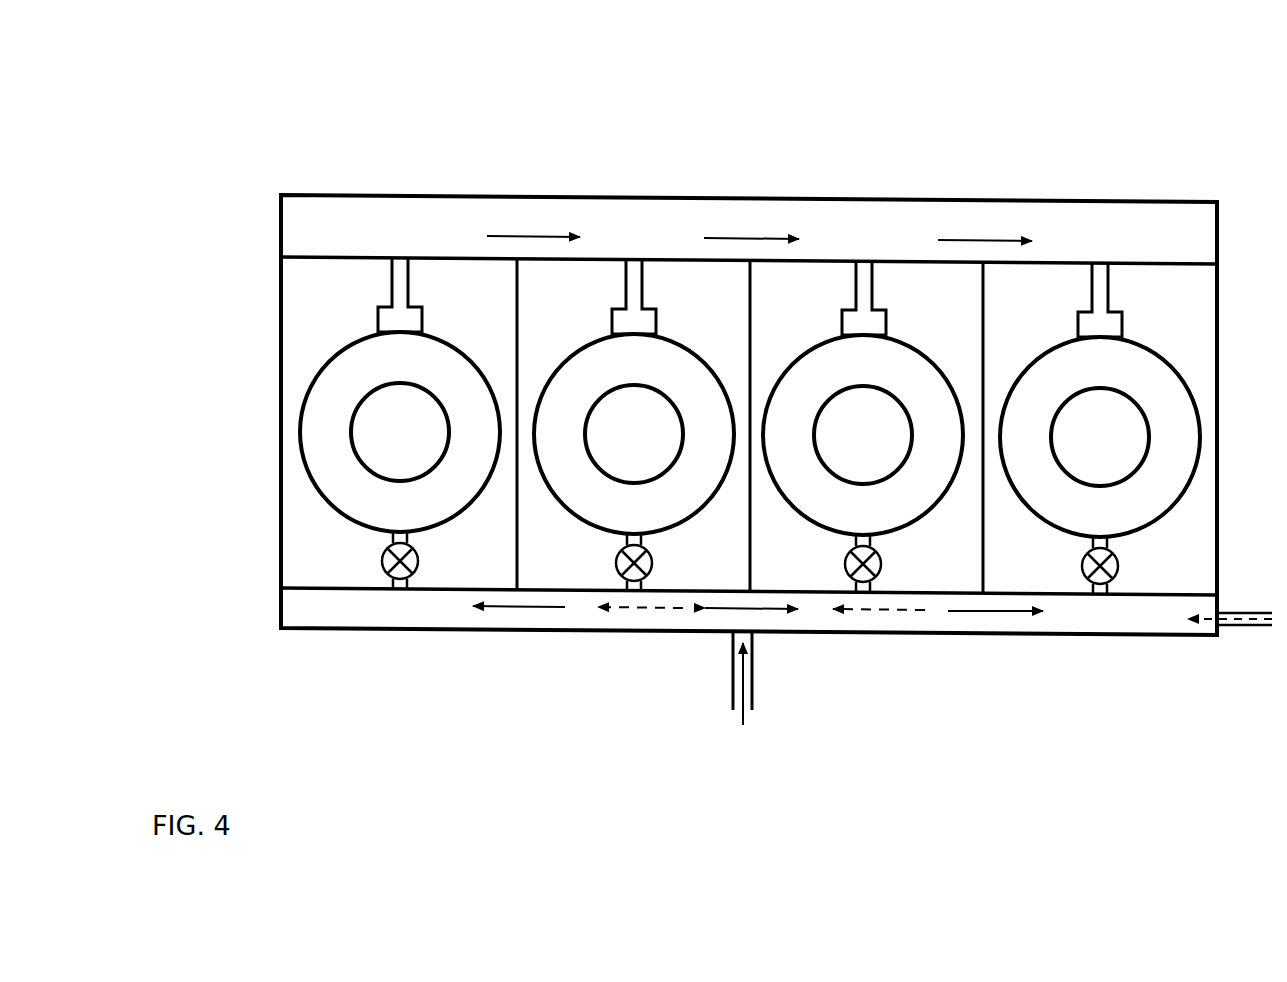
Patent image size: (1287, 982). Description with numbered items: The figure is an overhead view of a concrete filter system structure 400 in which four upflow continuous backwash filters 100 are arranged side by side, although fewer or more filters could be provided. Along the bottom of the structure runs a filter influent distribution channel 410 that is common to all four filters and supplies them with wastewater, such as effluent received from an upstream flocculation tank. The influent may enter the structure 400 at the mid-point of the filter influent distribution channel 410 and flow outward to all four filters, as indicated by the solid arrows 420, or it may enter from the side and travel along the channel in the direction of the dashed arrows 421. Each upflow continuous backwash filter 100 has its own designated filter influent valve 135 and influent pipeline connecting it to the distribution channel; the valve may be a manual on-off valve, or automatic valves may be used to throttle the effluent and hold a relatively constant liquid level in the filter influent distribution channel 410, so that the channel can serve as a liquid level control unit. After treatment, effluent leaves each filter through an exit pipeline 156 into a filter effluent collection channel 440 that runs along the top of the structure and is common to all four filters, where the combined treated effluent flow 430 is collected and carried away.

The concrete filter system structure 400 is at (353, 130).
The upflow continuous backwash filter 100 is at (314, 378).
The filter influent valve 135 is at (385, 575).
The exit pipeline 156 is at (400, 273).
The filter influent distribution channel 410 is at (297, 612).
The solid arrows 420 is at (533, 606).
The dashed arrows 421 is at (887, 611).
The combined treated effluent flow 430 is at (762, 235).
The filter effluent collection channel 440 is at (847, 220).